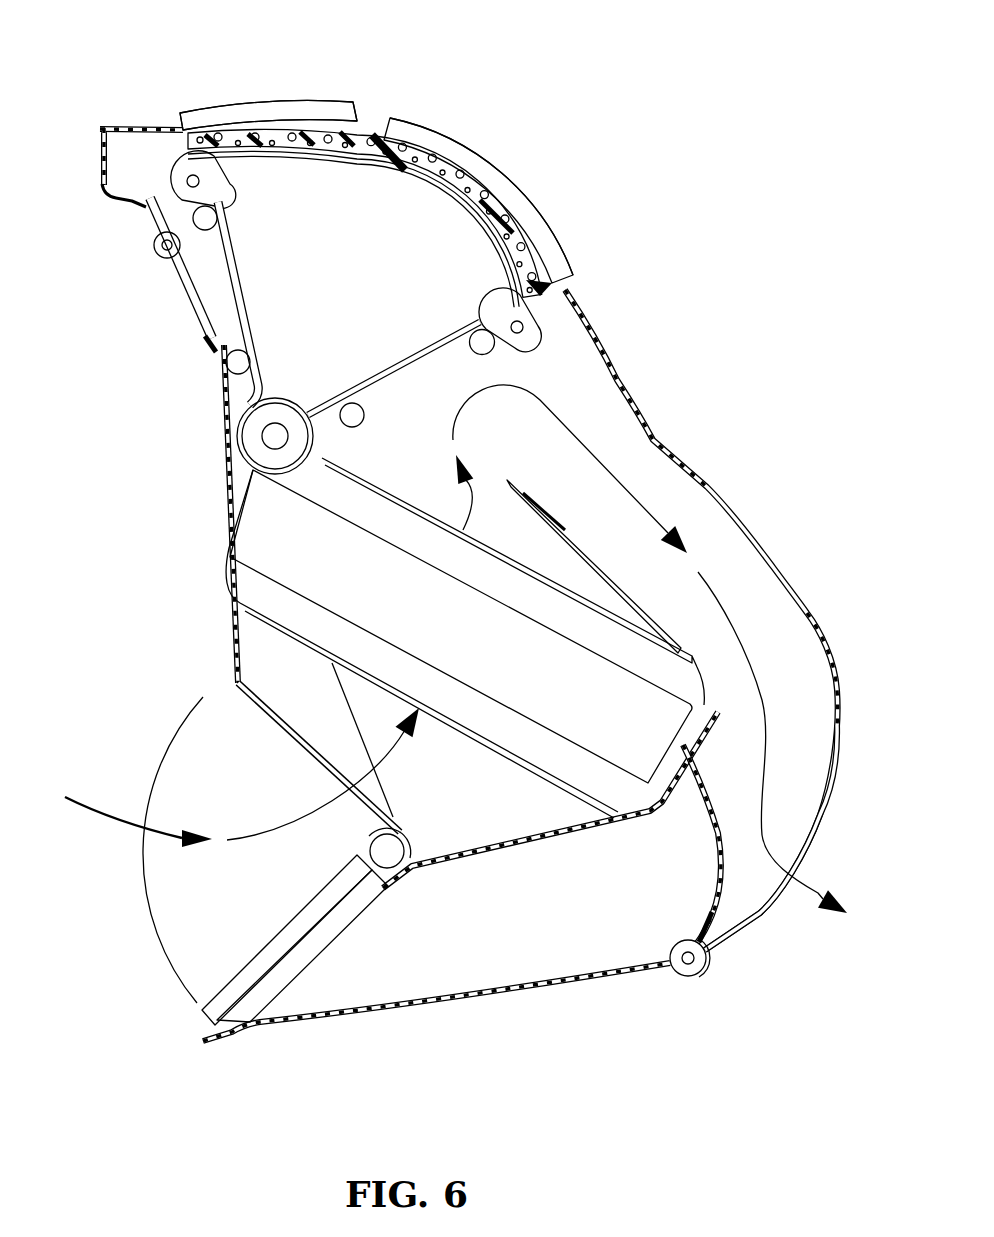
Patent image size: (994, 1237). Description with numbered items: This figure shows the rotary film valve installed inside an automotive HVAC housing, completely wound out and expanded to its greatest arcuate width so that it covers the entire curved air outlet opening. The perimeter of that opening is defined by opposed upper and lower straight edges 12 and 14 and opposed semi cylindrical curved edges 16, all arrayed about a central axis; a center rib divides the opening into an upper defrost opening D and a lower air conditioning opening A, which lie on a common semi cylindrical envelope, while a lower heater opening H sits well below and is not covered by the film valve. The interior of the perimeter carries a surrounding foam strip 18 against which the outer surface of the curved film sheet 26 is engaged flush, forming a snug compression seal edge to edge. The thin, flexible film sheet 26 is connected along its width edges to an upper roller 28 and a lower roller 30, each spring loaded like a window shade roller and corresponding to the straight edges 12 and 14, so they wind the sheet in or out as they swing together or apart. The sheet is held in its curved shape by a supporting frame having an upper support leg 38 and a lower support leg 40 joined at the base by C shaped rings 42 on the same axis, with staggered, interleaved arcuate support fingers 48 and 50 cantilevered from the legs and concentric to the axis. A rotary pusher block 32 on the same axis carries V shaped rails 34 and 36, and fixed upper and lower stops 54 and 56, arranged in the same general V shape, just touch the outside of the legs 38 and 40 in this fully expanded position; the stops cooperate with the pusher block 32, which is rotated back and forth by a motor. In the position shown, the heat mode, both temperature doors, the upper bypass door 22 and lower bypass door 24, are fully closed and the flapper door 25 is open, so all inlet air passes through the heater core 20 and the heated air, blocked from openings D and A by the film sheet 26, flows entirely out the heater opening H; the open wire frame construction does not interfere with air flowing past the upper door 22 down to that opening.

The upper straight edge 12 is at (183, 118).
The lower straight edge 14 is at (574, 286).
The semi cylindrical curved edges 16 is at (307, 100).
The foam strip 18 is at (408, 152).
The heater core 20 is at (245, 540).
The upper bypass door 22 is at (192, 297).
The lower bypass door 24 is at (310, 933).
The flapper door 25 is at (718, 872).
The film sheet 26 is at (392, 165).
The upper roller 28 is at (173, 176).
The lower roller 30 is at (540, 333).
The rotary pusher block 32 is at (250, 438).
The pusher block rail 34 is at (228, 368).
The pusher block rail 36 is at (364, 414).
The upper support leg 38 is at (252, 307).
The lower support leg 40 is at (420, 352).
The C shaped rings 42 is at (318, 450).
The arcuate support fingers 48 is at (280, 158).
The arcuate support fingers 50 is at (447, 196).
The upper stop 54 is at (207, 230).
The lower stop 56 is at (493, 350).
The defrost opening D is at (263, 102).
The air conditioning opening A is at (518, 205).
The heater opening H is at (828, 802).